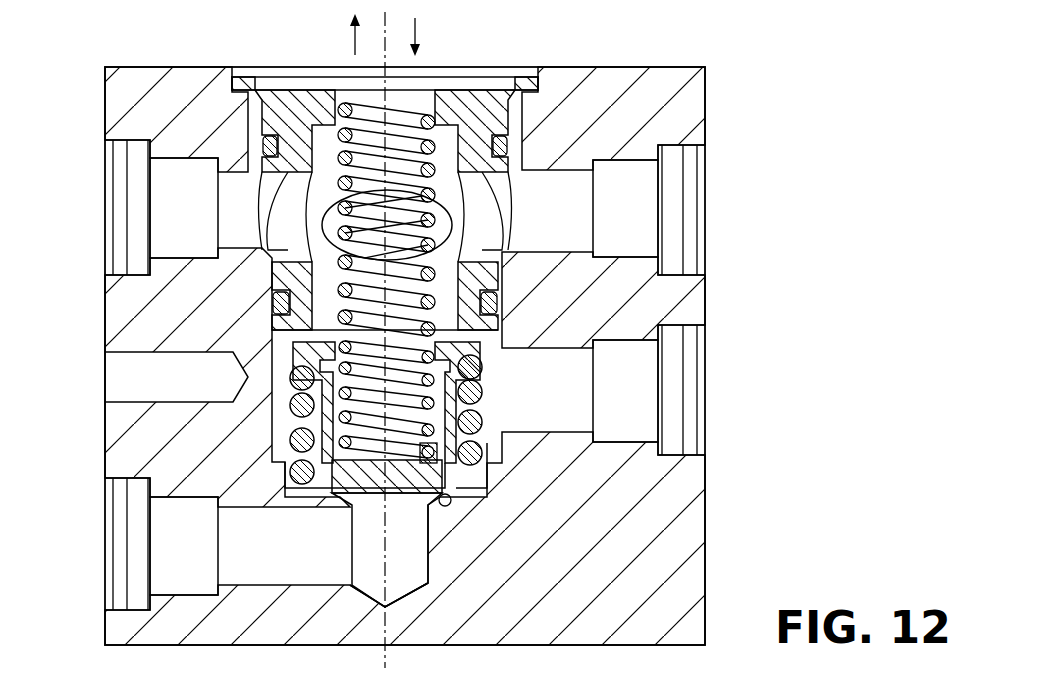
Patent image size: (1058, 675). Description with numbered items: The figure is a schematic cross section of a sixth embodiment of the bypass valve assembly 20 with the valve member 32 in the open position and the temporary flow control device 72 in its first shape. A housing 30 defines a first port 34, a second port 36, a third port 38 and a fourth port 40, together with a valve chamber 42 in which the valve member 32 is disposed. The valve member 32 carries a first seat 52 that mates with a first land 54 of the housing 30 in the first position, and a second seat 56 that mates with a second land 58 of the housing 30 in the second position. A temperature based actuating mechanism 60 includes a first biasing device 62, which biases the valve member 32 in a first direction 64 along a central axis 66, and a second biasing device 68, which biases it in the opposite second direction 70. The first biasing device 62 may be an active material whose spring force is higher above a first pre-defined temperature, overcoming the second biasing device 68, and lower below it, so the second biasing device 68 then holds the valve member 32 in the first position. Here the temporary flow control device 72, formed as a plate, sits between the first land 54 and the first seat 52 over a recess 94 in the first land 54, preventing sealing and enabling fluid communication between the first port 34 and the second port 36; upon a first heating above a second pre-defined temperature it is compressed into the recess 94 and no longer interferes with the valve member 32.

The bypass valve assembly 20 is at (678, 58).
The housing 30 is at (690, 103).
The valve member 32 is at (480, 413).
The first port 34 is at (688, 336).
The second port 36 is at (120, 606).
The third port 38 is at (112, 160).
The fourth port 40 is at (703, 148).
The valve chamber 42 is at (486, 343).
The first seat 52 is at (340, 430).
The first land 54 is at (350, 507).
The second seat 56 is at (300, 345).
The second land 58 is at (300, 262).
The temperature based actuating mechanism 60 is at (448, 270).
The first biasing device 62 is at (290, 395).
The first direction 64 is at (352, 40).
The central axis 66 is at (388, 618).
The second biasing device 68 is at (440, 126).
The second direction 70 is at (418, 33).
The temporary flow control device 72 is at (485, 467).
The recess 94 is at (455, 498).